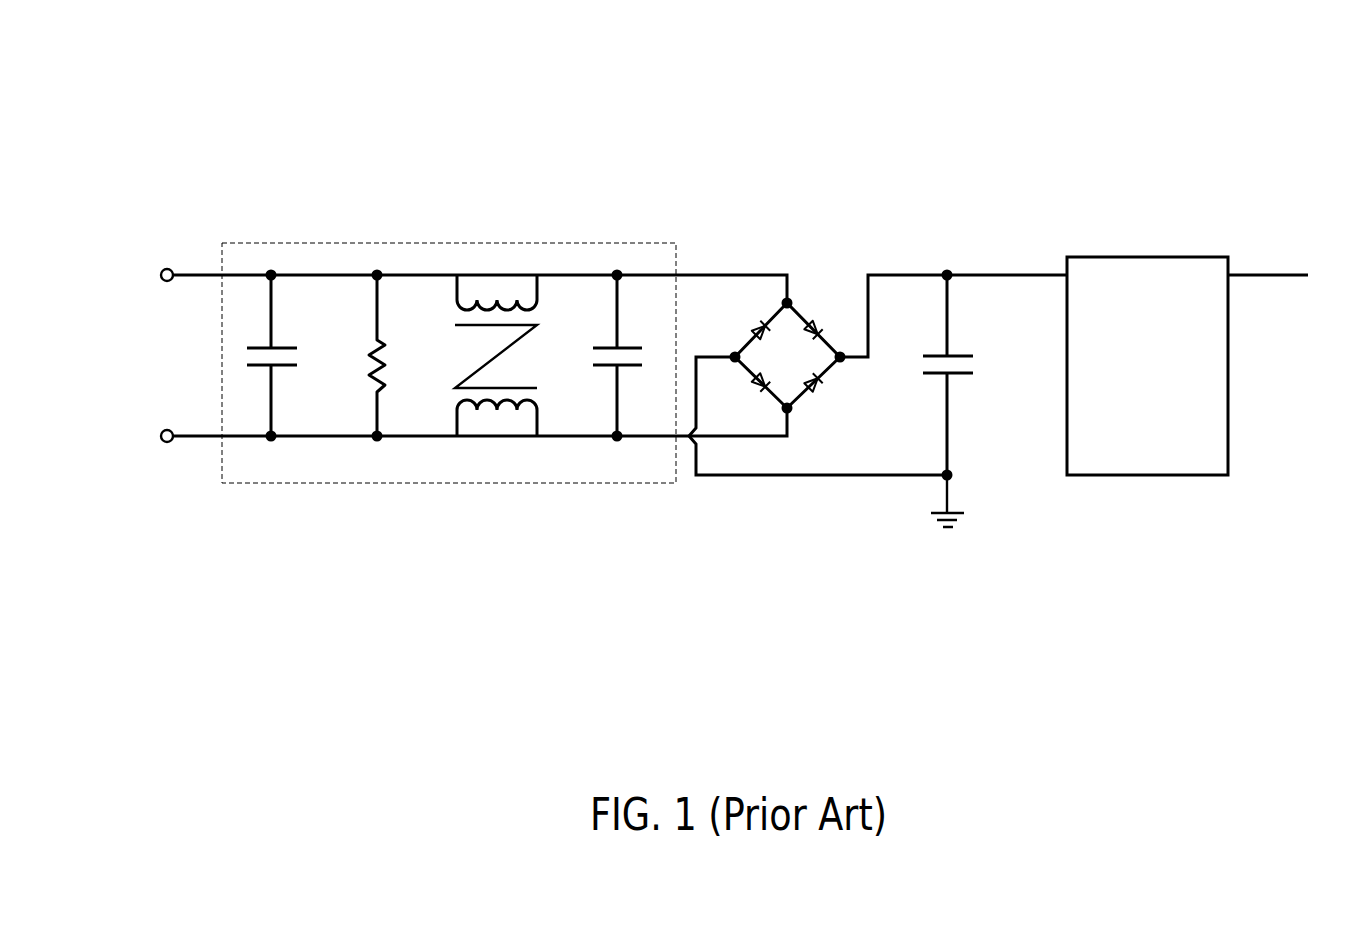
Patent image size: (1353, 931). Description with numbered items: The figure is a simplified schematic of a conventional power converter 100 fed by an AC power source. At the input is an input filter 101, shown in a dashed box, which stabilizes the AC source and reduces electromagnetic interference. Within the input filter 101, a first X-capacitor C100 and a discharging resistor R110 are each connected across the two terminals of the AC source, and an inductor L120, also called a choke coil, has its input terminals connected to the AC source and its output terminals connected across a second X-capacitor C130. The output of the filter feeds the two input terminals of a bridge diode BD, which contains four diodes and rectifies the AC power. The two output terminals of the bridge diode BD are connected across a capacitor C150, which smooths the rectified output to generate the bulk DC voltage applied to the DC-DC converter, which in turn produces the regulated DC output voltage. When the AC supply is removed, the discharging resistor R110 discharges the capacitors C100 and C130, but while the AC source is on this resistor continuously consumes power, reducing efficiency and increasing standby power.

The converter 100 is at (1147, 93).
The input filter 101 is at (490, 243).
The first X-capacitor C100 is at (288, 355).
The discharging resistor R110 is at (402, 355).
The inductor L120 is at (511, 355).
The second X-capacitor C130 is at (634, 355).
The bridge diode BD is at (787, 355).
The capacitor C150 is at (965, 399).